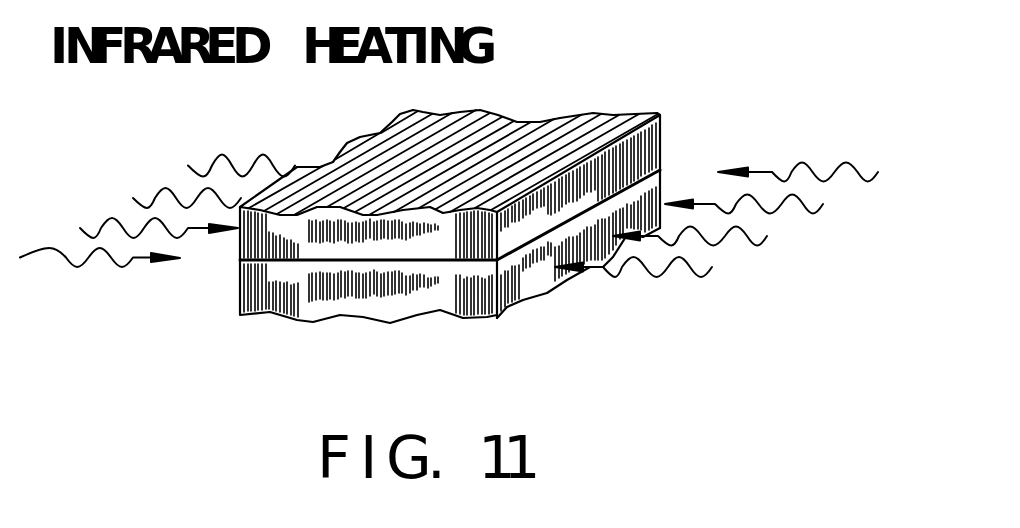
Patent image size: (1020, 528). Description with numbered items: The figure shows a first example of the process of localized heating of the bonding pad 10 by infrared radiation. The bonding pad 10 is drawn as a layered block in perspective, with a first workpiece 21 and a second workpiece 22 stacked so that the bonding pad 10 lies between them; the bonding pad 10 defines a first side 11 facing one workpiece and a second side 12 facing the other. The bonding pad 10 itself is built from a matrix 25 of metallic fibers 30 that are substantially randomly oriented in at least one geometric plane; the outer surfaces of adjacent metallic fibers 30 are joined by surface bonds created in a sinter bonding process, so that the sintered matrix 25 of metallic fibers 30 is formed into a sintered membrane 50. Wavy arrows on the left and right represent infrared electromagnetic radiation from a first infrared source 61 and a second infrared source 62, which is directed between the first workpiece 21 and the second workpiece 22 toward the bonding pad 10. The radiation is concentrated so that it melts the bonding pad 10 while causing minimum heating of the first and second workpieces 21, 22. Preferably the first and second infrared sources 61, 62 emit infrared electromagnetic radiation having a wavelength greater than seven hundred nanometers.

The bonding pad 10 is at (434, 306).
The first side 11 is at (427, 260).
The second side 12 is at (480, 278).
The first workpiece 21 is at (376, 295).
The second workpiece 22 is at (550, 130).
The matrix 25 is at (242, 315).
The metallic fibers 30 is at (273, 260).
The sintered membrane 50 is at (340, 260).
The first infrared source 61 is at (110, 265).
The second infrared source 62 is at (698, 275).